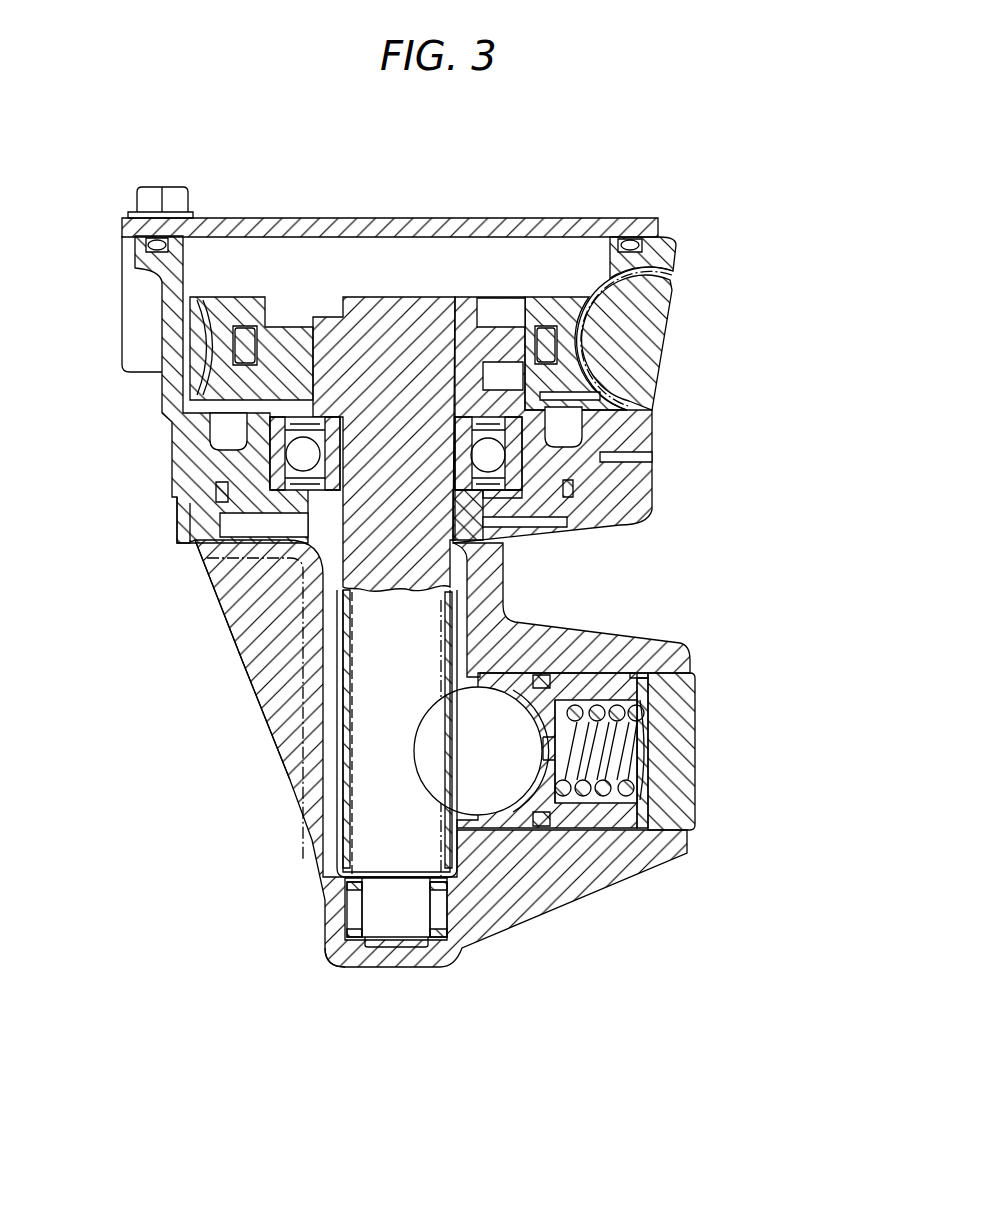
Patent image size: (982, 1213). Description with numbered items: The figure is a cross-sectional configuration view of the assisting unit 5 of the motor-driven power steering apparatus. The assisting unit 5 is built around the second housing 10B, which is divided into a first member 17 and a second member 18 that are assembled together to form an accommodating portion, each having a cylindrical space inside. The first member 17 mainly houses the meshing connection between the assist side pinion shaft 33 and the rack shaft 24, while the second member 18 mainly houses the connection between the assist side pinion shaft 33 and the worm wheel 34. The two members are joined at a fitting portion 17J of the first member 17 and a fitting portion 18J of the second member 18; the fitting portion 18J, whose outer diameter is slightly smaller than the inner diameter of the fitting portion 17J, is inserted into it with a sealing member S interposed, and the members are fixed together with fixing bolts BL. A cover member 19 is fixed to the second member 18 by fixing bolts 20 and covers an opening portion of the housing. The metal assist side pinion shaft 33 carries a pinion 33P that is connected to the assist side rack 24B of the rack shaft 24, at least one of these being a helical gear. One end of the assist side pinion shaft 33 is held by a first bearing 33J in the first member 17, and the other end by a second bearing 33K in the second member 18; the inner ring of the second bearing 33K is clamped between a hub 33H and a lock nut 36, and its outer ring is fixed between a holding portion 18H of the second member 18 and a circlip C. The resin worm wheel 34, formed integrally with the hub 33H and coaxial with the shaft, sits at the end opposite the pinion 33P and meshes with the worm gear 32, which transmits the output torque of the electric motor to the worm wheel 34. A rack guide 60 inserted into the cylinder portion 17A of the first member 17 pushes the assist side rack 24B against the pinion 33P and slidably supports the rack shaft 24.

The assisting unit 5 is at (686, 192).
The second housing 10B is at (320, 938).
The first member 17 is at (420, 968).
The cylinder portion 17A is at (615, 832).
The fitting portion 17J is at (217, 467).
The second member 18 is at (165, 400).
The holding portion 18H is at (583, 456).
The fitting portion 18J is at (218, 503).
The cover member 19 is at (546, 218).
The fixing bolts 20 is at (160, 187).
The rack shaft 24 is at (500, 800).
The assist side rack 24B is at (433, 732).
The worm gear 32 is at (672, 283).
The assist side pinion shaft 33 is at (380, 657).
The hub 33H is at (572, 395).
The first bearing 33J is at (440, 905).
The second bearing 33K is at (513, 470).
The pinion 33P is at (352, 835).
The worm wheel 34 is at (236, 300).
The lock nut 36 is at (512, 558).
The rack guide 60 is at (714, 722).
The fixing bolts BL is at (186, 546).
The circlip C is at (550, 517).
The sealing member S is at (186, 546).